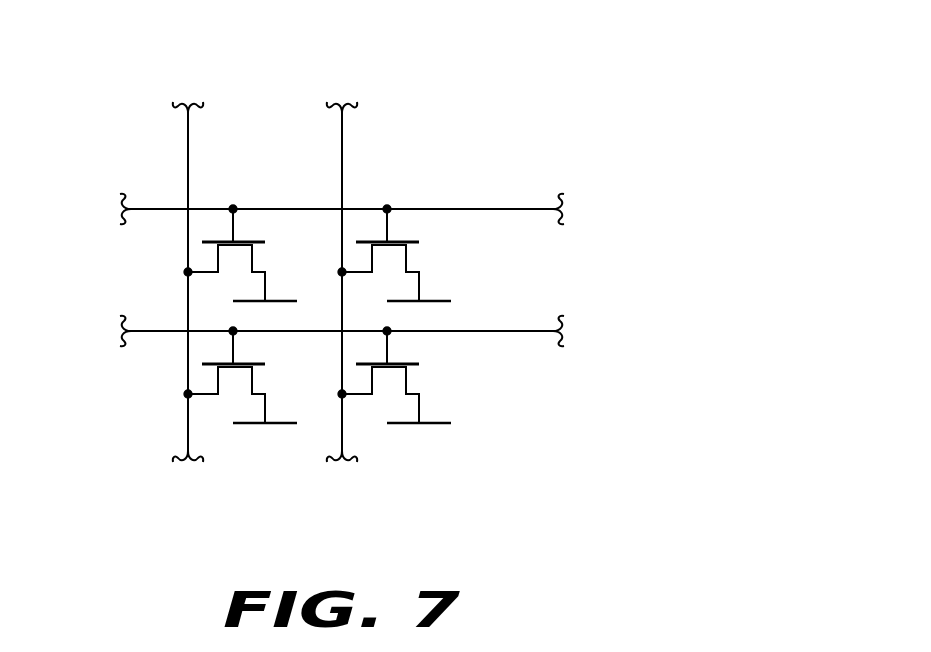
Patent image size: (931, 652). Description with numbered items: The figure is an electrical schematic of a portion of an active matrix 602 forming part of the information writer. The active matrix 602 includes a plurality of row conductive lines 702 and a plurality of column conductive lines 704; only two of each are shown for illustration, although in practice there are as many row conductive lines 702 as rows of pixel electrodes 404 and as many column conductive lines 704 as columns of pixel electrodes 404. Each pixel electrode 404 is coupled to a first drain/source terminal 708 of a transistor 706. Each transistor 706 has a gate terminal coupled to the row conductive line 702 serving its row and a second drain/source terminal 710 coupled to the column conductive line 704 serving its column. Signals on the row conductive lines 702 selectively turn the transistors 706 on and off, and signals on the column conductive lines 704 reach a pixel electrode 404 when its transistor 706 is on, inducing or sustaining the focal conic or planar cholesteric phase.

The active matrix 602 is at (538, 98).
The row conductive lines 702 is at (146, 210).
The column conductive lines 704 is at (342, 148).
The transistor 706 is at (248, 237).
The first drain/source terminal 708 is at (252, 268).
The second drain/source terminal 710 is at (212, 272).
The pixel electrode 404 is at (320, 288).